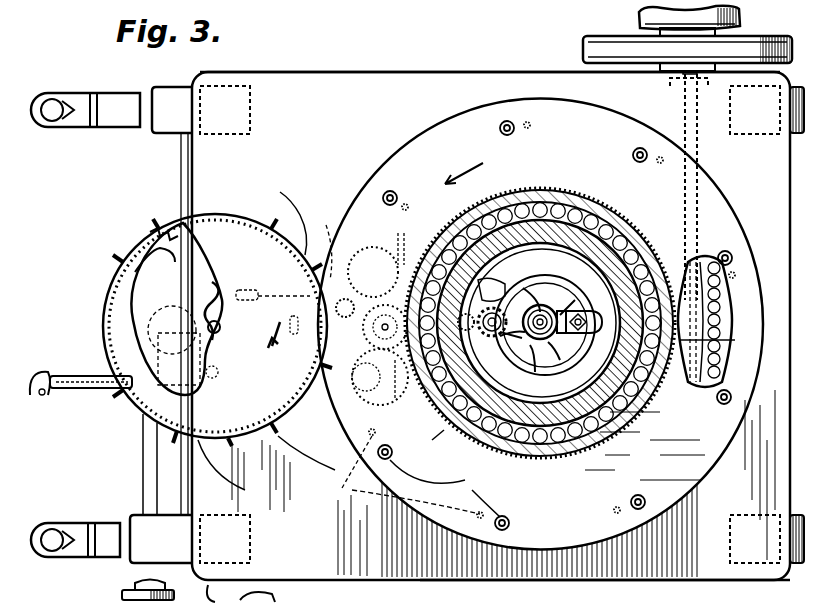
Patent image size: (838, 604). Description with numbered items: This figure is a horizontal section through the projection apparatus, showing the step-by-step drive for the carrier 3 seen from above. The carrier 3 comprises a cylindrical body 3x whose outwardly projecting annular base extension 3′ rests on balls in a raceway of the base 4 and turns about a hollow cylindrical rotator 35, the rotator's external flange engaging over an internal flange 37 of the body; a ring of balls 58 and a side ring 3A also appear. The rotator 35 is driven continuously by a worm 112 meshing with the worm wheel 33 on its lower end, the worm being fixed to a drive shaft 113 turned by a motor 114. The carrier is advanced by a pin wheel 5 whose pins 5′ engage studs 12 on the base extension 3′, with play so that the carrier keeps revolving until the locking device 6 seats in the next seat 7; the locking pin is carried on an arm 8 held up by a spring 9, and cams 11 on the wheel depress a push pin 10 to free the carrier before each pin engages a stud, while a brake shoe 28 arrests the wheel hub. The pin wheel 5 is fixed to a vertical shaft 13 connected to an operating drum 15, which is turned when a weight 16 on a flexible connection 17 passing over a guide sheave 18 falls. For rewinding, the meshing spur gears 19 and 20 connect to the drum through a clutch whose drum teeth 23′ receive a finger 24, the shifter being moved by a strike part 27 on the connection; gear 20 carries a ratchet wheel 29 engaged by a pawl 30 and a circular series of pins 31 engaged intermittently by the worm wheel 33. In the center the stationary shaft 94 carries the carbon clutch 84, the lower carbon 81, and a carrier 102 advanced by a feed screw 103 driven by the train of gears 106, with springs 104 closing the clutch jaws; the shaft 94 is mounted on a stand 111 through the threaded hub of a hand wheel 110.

The carrier 3 is at (418, 545).
The annular base extension 3′ is at (405, 150).
The cylindrical body 3x is at (427, 444).
The side ring bearing 3A is at (726, 314).
The base 4 is at (356, 82).
The pin wheel 5 is at (236, 440).
The pins 5′ is at (268, 442).
The locking device 6 is at (352, 270).
The seats 7 is at (406, 475).
The arm 8 is at (262, 290).
The spring 9 is at (272, 335).
The push pin 10 is at (331, 242).
The cams 11 is at (282, 198).
The studs 12 is at (445, 488).
The vertical shaft 13 is at (218, 330).
The operating drum 15 is at (122, 262).
The weight 16 is at (40, 372).
The flexible connection 17 is at (78, 378).
The guide sheave 18 is at (76, 392).
The spur gear 19 is at (160, 232).
The spur gear 20 is at (370, 392).
The clutch part 23′ is at (216, 376).
The finger 24 is at (110, 290).
The strike part 27 is at (42, 396).
The brake shoe 28 is at (222, 324).
The ratchet wheel 29 is at (381, 314).
The pawl 30 is at (381, 383).
The pins 31 is at (407, 241).
The worm wheel 33 is at (565, 460).
The rotator 35 is at (540, 323).
The internal flange 37 is at (550, 462).
The ball bearings 58 is at (632, 418).
The carbon 81 is at (542, 323).
The clutch 84 is at (605, 592).
The stationary shaft 94 is at (505, 318).
The carrier 102 is at (556, 314).
The feed screw 103 is at (521, 344).
The springs 104 is at (186, 603).
The train of gears 106 is at (481, 302).
The hand wheel 110 is at (540, 288).
The stand 111 is at (576, 335).
The worm 112 is at (721, 347).
The drive shaft 113 is at (700, 148).
The motor 114 is at (742, 18).